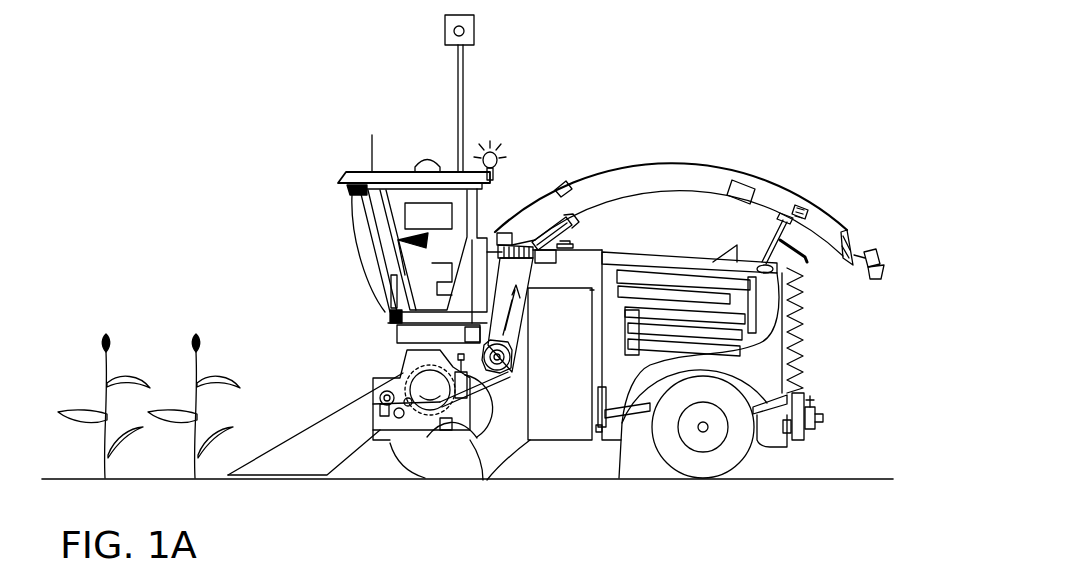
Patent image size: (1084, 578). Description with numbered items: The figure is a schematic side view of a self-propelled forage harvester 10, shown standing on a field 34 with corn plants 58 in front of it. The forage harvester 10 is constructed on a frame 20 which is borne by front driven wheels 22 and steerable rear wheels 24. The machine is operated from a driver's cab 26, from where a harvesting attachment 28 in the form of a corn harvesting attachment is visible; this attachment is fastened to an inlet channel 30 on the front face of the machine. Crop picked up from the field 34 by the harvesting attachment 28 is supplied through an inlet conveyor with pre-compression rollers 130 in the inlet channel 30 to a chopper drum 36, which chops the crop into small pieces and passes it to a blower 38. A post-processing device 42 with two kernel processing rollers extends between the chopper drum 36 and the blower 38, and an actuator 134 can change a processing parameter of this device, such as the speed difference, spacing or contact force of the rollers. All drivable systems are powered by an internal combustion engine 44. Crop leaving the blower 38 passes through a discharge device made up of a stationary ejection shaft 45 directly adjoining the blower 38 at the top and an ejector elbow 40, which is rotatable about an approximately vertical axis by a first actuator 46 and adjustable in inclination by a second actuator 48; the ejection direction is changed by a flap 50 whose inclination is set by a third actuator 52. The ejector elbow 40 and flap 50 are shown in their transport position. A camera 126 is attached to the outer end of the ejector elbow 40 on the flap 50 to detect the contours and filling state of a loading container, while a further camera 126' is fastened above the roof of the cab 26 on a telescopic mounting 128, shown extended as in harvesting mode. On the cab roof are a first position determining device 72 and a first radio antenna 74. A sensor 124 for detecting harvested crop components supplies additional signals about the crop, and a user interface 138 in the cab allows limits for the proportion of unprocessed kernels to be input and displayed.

The self-propelled forage harvester 10 is at (593, 292).
The frame 20 is at (679, 407).
The front driven wheels 22 is at (379, 441).
The steerable rear wheels 24 is at (711, 474).
The driver's cab 26 is at (434, 177).
The harvesting attachment 28 is at (315, 424).
The inlet channel 30 is at (350, 496).
The field 34 is at (467, 455).
The chopper drum 36 is at (430, 464).
The blower 38 is at (518, 439).
The ejector elbow 40 is at (719, 188).
The post-processing device 42 is at (501, 410).
The internal combustion engine 44 is at (752, 314).
The stationary ejection shaft 45 is at (563, 423).
The first actuator 46 is at (549, 291).
The second actuator 48 is at (594, 229).
The flap 50 is at (892, 247).
The third actuator 52 is at (774, 153).
The corn plants 58 is at (182, 377).
The first position determining device 72 is at (460, 130).
The first radio antenna 74 is at (331, 124).
The sensor for detecting harvested crop components 124 is at (579, 154).
The camera 126 is at (899, 280).
The camera 126' is at (512, 28).
The telescopic mounting 128 is at (502, 108).
The pre-compression rollers 130 is at (396, 379).
The actuator 134 is at (391, 358).
The user interface 138 is at (422, 155).